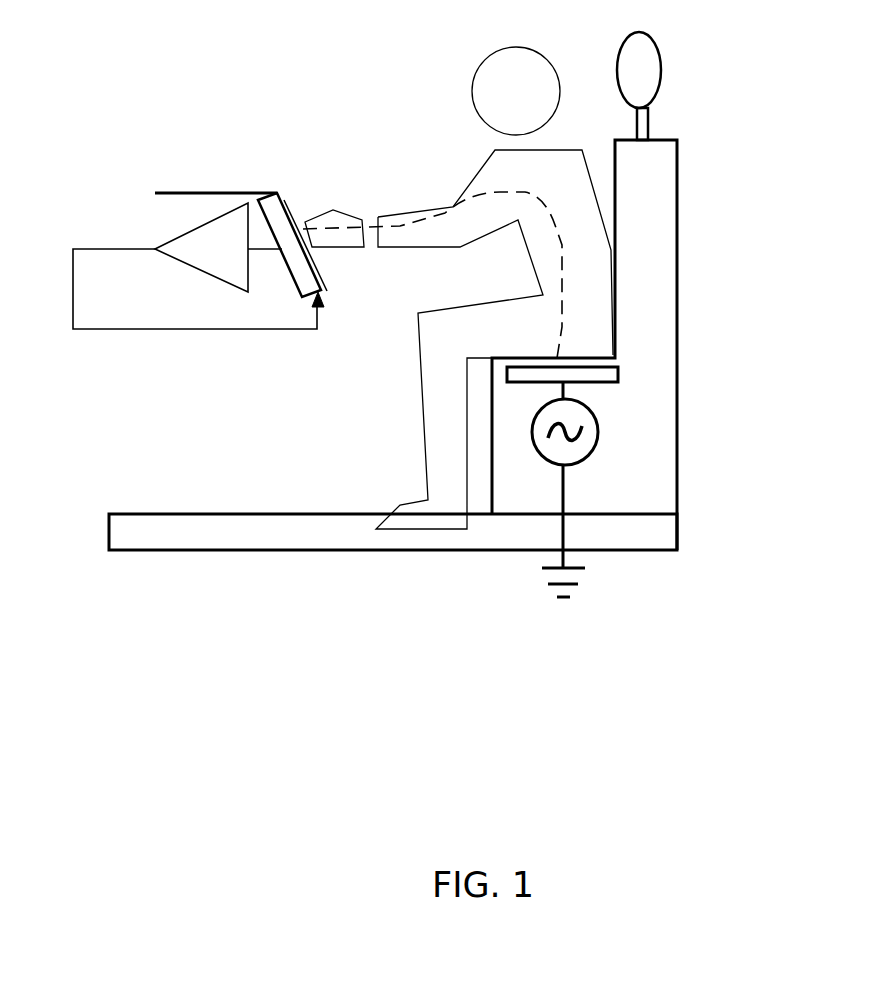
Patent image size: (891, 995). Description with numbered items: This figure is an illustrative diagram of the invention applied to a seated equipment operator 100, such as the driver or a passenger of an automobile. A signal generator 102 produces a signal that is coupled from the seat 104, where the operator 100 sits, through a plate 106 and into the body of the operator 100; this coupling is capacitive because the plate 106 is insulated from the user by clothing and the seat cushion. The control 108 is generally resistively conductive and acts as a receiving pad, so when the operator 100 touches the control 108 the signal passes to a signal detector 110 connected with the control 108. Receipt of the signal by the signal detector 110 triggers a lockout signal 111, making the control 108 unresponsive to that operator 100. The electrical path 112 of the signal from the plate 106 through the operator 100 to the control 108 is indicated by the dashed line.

The seated equipment operator 100 is at (592, 293).
The signal generator 102 is at (598, 432).
The seat 104 is at (657, 492).
The plate 106 is at (618, 375).
The control 108 is at (285, 205).
The signal detector 110 is at (217, 217).
The lockout signal 111 is at (192, 329).
The electrical path 112 is at (558, 235).